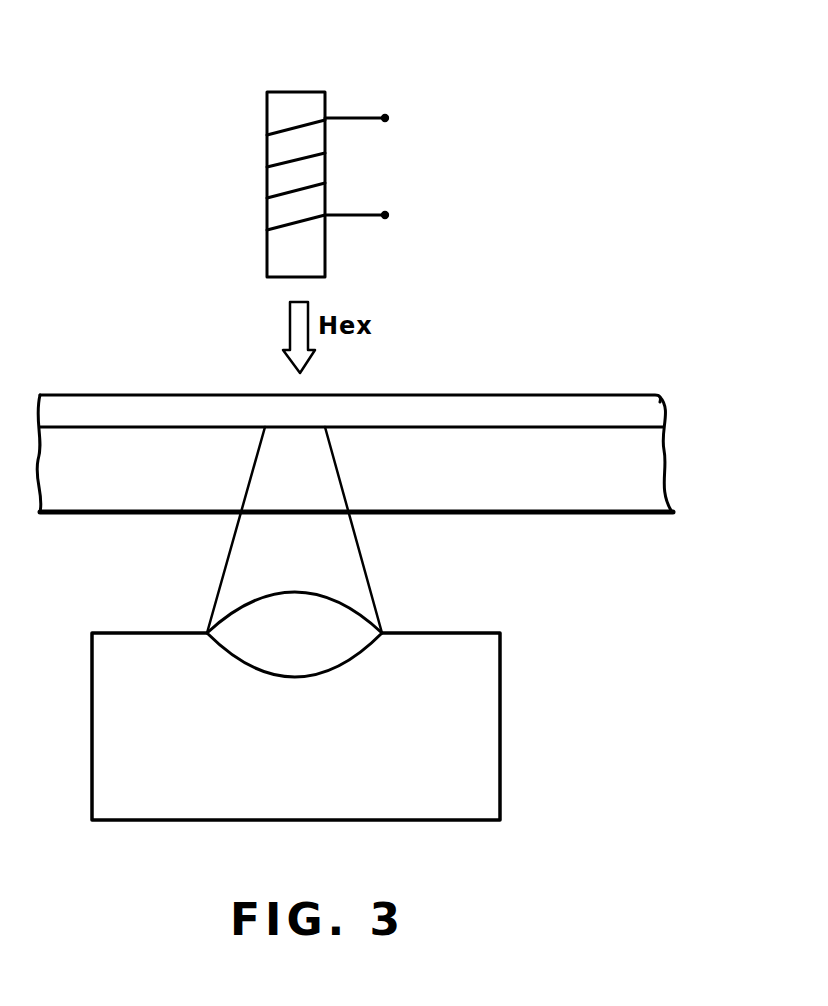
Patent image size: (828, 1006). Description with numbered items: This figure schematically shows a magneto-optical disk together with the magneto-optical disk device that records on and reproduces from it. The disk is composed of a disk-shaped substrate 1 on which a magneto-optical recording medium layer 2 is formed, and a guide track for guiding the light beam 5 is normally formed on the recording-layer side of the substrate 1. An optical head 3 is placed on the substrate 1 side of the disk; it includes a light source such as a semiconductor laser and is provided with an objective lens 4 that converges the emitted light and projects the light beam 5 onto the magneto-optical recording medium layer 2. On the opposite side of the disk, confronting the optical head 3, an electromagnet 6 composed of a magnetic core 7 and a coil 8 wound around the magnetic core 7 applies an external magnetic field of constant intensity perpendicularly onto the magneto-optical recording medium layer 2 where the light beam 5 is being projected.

The substrate 1 is at (672, 470).
The magneto-optical recording medium layer 2 is at (643, 407).
The optical head 3 is at (502, 747).
The objective lens 4 is at (363, 630).
The light beam 5 is at (365, 563).
The electromagnet 6 is at (256, 110).
The magnetic core 7 is at (292, 100).
The coil 8 is at (362, 118).